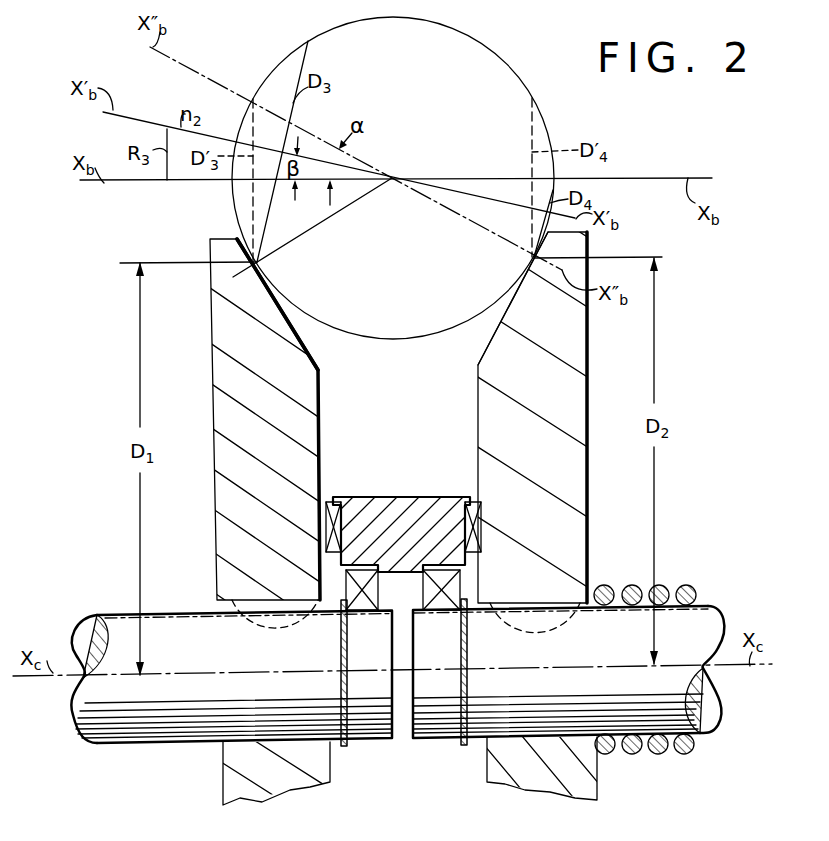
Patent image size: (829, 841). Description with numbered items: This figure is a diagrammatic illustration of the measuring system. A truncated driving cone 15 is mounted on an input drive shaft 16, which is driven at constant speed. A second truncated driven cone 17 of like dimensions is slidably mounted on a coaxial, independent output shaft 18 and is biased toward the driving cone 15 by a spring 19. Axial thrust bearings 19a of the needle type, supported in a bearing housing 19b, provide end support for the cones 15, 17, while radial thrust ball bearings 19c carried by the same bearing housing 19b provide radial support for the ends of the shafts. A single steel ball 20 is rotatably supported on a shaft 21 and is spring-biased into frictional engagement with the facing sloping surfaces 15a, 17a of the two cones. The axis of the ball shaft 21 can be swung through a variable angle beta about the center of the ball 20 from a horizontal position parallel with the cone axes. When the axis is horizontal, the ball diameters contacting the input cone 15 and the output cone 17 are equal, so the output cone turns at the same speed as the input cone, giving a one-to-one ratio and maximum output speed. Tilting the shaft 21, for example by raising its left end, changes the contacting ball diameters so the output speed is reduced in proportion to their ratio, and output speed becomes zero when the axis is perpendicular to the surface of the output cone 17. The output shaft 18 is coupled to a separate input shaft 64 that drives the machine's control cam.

The truncated driving cone 15 is at (235, 415).
The sloping surface of driving cone 15a is at (302, 337).
The input drive shaft 16 is at (210, 727).
The truncated driven cone 17 is at (573, 517).
The sloping surface of driven cone 17a is at (500, 320).
The output shaft 18 is at (503, 723).
The spring 19 is at (688, 585).
The axial thrust bearings 19a is at (326, 520).
The bearing housing 19b is at (390, 497).
The radial thrust ball bearings 19c is at (346, 585).
The steel ball 20 is at (463, 32).
The ball shaft 21 is at (147, 119).
The separate input shaft 64 is at (713, 697).